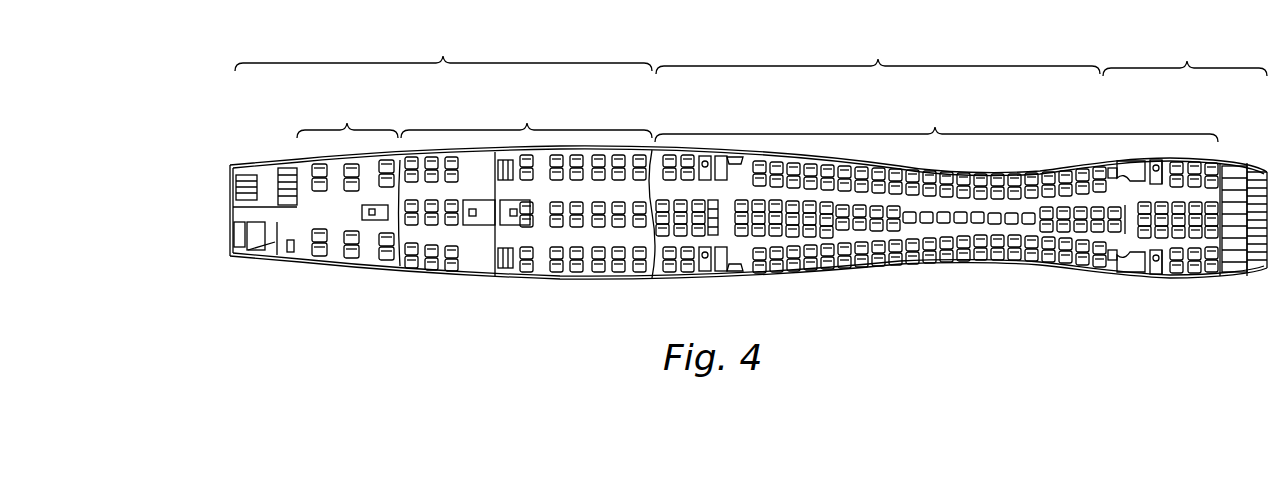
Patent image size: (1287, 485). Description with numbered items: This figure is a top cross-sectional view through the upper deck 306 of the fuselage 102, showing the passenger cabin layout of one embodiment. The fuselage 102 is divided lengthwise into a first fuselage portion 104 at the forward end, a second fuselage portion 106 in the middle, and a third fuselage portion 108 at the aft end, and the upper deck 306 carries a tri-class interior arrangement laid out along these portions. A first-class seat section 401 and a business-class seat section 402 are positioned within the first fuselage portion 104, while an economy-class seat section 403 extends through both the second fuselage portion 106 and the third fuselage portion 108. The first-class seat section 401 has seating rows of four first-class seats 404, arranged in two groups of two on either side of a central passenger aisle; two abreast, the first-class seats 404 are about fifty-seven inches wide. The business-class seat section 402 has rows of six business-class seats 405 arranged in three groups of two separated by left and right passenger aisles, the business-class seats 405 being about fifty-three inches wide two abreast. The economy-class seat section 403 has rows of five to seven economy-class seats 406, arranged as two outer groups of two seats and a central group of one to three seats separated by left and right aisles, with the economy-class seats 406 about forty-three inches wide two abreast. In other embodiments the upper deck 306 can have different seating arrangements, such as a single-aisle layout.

The fuselage 102 is at (340, 270).
The first fuselage portion 104 is at (443, 54).
The second fuselage portion 106 is at (878, 57).
The third fuselage portion 108 is at (1187, 59).
The upper deck 306 is at (228, 210).
The first-class seat section 401 is at (347, 121).
The business-class seat section 402 is at (527, 121).
The economy-class seat section 403 is at (935, 125).
The first-class seats 404 is at (312, 172).
The business-class seats 405 is at (550, 165).
The economy-class seats 406 is at (878, 196).